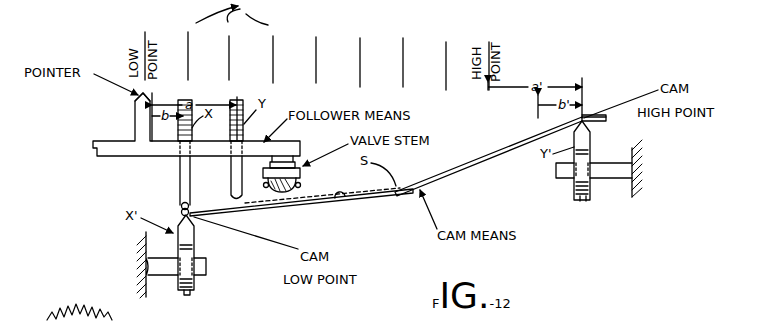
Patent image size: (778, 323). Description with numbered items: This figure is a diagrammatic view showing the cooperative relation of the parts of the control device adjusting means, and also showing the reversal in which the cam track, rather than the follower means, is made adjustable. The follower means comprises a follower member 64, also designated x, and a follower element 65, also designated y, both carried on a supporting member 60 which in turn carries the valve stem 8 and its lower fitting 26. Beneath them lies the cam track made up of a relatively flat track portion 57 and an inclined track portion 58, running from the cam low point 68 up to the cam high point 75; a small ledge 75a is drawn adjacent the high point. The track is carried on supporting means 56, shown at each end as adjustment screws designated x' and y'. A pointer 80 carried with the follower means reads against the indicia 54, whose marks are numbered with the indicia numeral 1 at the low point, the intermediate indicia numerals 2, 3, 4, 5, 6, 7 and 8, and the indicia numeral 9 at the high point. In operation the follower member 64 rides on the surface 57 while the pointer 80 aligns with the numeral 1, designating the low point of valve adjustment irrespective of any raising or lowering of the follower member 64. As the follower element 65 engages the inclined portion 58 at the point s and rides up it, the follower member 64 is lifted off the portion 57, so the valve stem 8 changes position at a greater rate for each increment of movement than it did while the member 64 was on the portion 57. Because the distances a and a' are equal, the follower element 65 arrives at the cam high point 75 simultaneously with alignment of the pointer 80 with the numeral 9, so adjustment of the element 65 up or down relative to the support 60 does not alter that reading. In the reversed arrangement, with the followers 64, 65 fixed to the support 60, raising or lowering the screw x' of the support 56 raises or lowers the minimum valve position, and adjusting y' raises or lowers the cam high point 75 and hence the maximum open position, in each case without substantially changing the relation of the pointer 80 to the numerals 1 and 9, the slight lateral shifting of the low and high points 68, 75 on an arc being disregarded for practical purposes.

The indicia numeral "1" 1 is at (145, 47).
The indicia numeral "2" 2 is at (186, 48).
The indicia numeral "3" 3 is at (227, 50).
The indicia numeral "4" 4 is at (270, 52).
The indicia numeral "5" 5 is at (314, 52).
The indicia numeral "6" 6 is at (358, 54).
The indicia numeral "7" 7 is at (401, 54).
The valve stem 8 is at (444, 57).
The indicia numeral "9" 9 is at (487, 57).
The indicia 54 is at (232, 14).
The pointer 80 is at (142, 114).
The support for follower means 60 is at (297, 142).
The valve stem roller assembly 26 is at (301, 188).
The follower member 64 is at (180, 180).
The follower element 65 is at (233, 186).
The cam low point 68 is at (180, 207).
The supporting means for the cam track 56 is at (194, 248).
The cam track portion 57 is at (340, 198).
The cam track portion 58 is at (441, 164).
The cam high point 75 is at (583, 115).
The cam high point ledge 75a is at (606, 118).